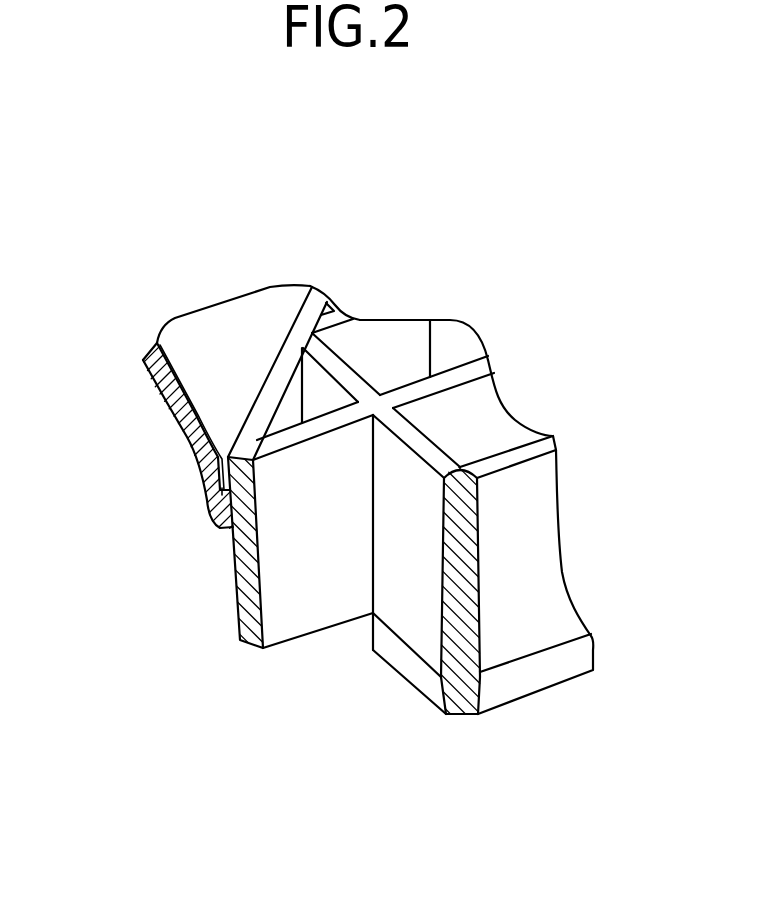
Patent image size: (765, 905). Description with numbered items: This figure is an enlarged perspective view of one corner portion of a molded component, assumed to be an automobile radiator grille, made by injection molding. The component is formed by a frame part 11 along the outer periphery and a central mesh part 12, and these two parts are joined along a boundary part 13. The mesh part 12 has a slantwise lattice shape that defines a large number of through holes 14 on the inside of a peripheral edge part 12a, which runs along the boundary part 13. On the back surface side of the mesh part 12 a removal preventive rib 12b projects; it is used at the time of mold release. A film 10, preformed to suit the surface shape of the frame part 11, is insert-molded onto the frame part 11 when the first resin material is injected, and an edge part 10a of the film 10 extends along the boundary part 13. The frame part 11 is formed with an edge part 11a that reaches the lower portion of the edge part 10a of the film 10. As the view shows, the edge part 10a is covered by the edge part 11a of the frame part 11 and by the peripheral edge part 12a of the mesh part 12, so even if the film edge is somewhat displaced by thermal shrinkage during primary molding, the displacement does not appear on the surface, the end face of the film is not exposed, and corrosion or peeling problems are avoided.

The film 10 is at (198, 333).
The edge part 10a is at (219, 489).
The frame part 11 is at (178, 418).
The edge part 11a is at (217, 527).
The mesh part 12 is at (505, 393).
The peripheral edge part 12a is at (263, 575).
The removal preventive rib 12b is at (460, 716).
The boundary part 13 is at (316, 279).
The through holes 14 is at (448, 340).